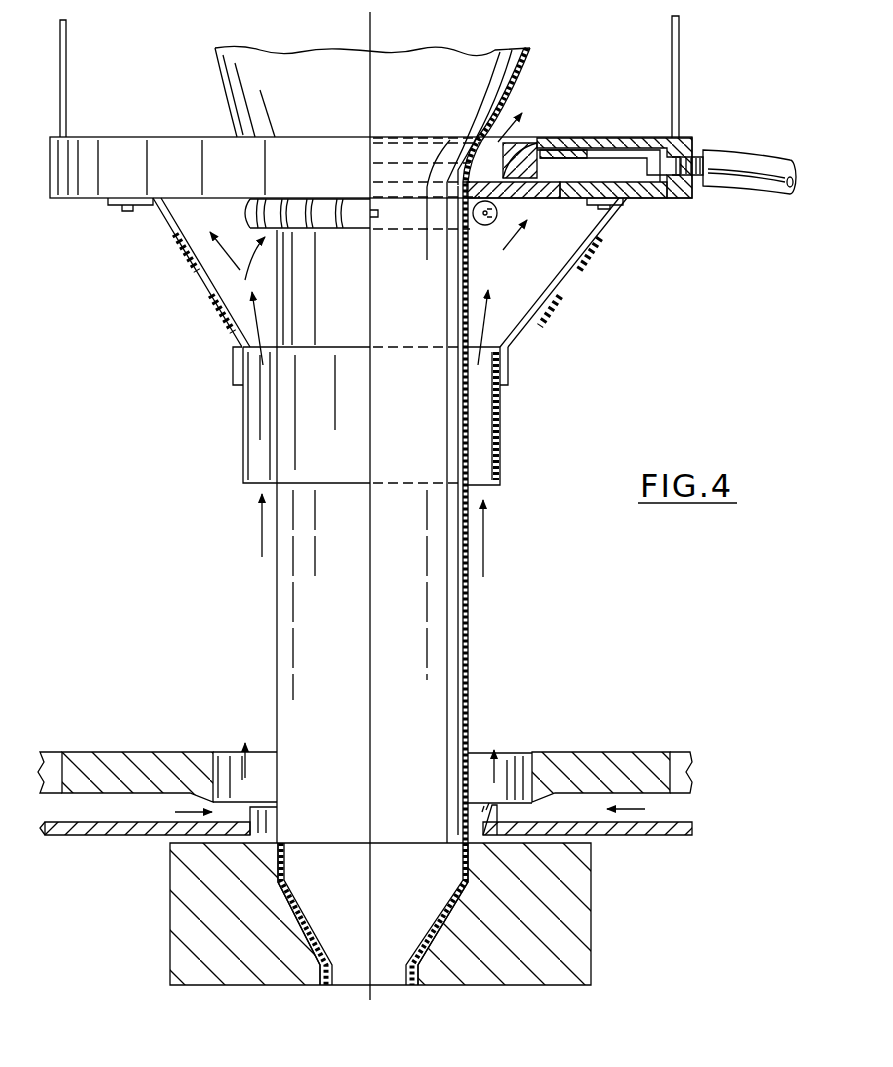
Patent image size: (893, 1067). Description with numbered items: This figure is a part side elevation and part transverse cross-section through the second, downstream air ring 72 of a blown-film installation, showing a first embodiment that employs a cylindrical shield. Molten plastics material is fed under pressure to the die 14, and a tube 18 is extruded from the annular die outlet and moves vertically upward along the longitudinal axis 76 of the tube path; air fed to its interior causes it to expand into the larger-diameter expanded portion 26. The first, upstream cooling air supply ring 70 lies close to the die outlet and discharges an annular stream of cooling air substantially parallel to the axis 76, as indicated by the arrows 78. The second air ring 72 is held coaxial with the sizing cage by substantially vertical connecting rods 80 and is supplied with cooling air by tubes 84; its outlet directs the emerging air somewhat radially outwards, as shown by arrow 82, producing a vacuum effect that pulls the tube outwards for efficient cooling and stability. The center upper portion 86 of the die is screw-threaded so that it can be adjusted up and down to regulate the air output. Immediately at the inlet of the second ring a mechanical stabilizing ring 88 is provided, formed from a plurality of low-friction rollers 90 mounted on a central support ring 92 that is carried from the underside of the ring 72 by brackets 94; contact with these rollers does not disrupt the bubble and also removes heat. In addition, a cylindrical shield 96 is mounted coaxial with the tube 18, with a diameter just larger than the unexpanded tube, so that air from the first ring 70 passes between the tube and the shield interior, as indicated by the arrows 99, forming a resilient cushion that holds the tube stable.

The die 14 is at (580, 884).
The tube 18 is at (310, 640).
The expanded portion 26 is at (532, 52).
The first cooling air supply ring 70 is at (572, 758).
The second cooling air supply ring 72 is at (622, 137).
The longitudinal axis 76 is at (372, 30).
The arrows 78 is at (263, 527).
The connecting rods 80 is at (66, 56).
The arrow 82 is at (522, 130).
The tubes 84 is at (733, 152).
The center upper portion 86 is at (553, 147).
The mechanical stabilizing ring 88 is at (237, 267).
The rollers 90 is at (488, 225).
The central support ring 92 is at (490, 226).
The brackets 94 is at (237, 203).
The cylindrical shield 96 is at (500, 422).
The arrows 99 is at (232, 327).